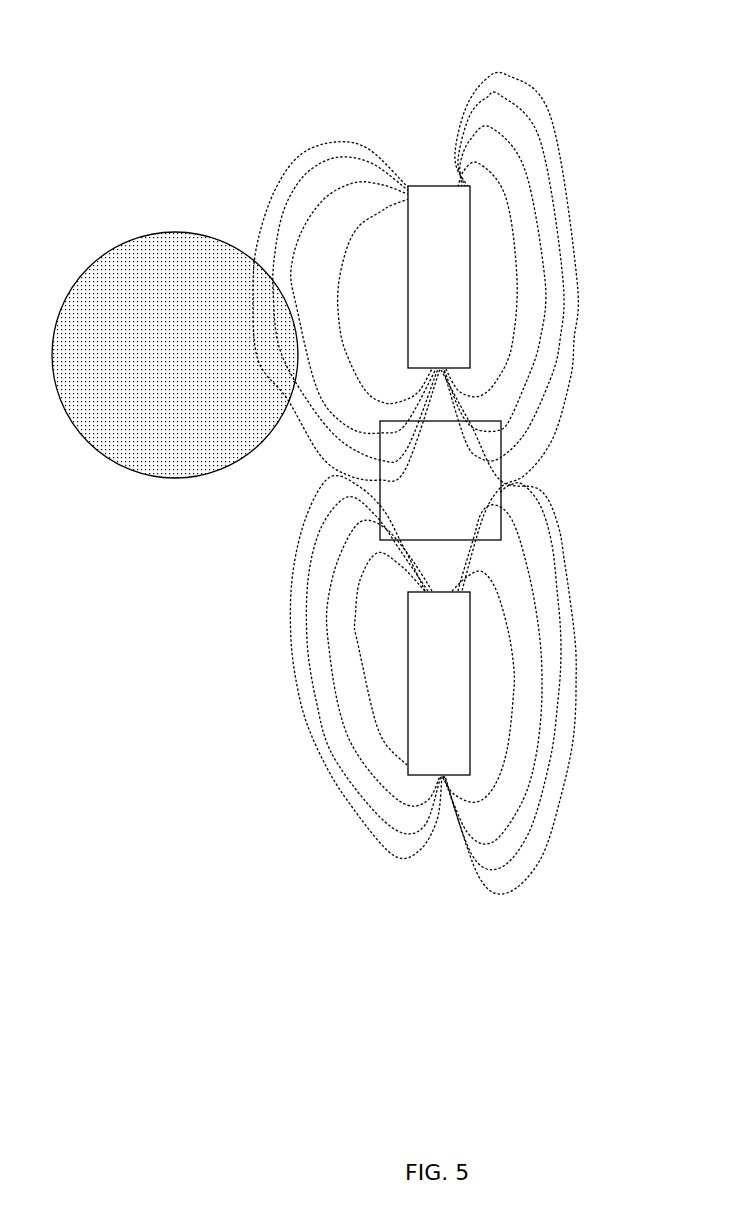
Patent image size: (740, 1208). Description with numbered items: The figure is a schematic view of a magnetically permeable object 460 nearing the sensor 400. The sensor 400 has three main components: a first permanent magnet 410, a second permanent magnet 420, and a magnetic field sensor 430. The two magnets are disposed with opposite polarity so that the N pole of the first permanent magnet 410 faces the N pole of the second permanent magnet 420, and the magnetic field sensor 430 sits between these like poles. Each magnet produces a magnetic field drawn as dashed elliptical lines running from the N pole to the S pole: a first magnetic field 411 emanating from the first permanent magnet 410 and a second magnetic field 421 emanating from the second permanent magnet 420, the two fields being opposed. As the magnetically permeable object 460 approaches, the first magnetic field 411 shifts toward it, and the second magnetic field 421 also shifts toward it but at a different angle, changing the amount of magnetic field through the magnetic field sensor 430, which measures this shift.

The sensor 400 is at (552, 47).
The first permanent magnet 410 is at (424, 291).
The first magnetic field 411 is at (265, 193).
The second permanent magnet 420 is at (424, 696).
The second magnetic field 421 is at (313, 742).
The magnetic field sensor 430 is at (421, 496).
The magnetically permeable object 460 is at (112, 248).